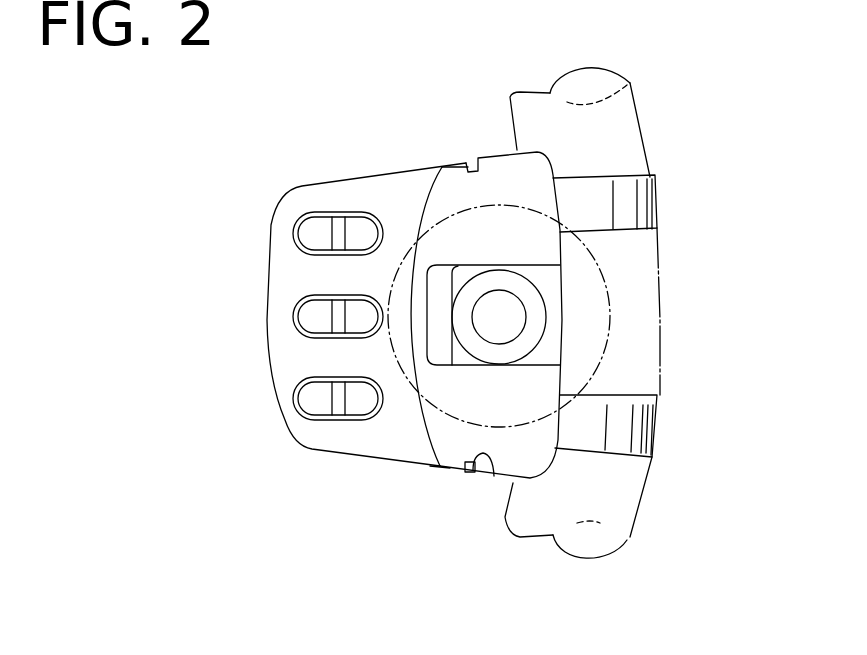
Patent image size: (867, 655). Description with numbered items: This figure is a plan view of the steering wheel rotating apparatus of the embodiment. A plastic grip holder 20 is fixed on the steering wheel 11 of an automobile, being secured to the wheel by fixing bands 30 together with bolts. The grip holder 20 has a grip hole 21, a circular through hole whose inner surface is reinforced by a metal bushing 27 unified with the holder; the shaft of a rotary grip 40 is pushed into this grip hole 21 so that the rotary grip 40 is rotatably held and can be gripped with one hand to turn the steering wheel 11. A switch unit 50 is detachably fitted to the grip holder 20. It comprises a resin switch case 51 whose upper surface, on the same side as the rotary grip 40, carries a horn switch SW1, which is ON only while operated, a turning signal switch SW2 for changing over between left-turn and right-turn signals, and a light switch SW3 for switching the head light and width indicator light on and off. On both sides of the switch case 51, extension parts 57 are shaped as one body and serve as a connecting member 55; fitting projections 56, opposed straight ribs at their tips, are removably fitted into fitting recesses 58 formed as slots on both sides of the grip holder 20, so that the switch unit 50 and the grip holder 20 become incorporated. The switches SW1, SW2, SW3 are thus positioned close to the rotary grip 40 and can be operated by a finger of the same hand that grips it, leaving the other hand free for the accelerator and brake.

The steering wheel 11 is at (640, 503).
The grip holder 20 is at (491, 155).
The grip hole 21 is at (512, 313).
The metal bushing 27 is at (513, 280).
The fixing bands 30 is at (657, 200).
The rotary grip 40 is at (610, 325).
The switch unit 50 is at (354, 170).
The switch case 51 is at (285, 362).
The connecting member 55 is at (457, 482).
The fitting projections 56 is at (471, 474).
The extension parts 57 is at (440, 473).
The fitting recesses 58 is at (494, 476).
The horn switch SW1 is at (310, 233).
The turning signal switch SW2 is at (307, 313).
The light switch SW3 is at (298, 412).